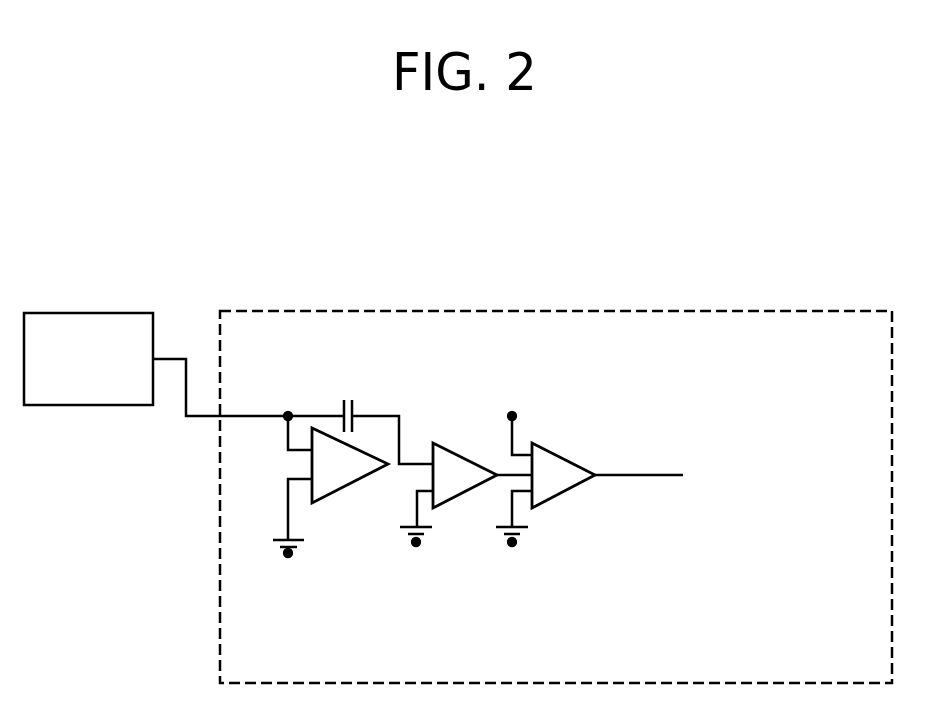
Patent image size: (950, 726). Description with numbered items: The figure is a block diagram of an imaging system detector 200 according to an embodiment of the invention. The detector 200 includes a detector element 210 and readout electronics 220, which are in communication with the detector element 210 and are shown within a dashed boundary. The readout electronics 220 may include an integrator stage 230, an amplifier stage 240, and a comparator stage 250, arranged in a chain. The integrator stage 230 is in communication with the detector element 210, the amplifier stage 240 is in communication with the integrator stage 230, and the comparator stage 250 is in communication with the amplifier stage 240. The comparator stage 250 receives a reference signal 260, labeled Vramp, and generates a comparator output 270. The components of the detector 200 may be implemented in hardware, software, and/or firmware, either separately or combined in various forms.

The imaging system detector 200 is at (158, 208).
The detector element 210 is at (83, 312).
The readout electronics 220 is at (296, 310).
The integrator stage 230 is at (288, 598).
The amplifier stage 240 is at (412, 598).
The comparator stage 250 is at (548, 598).
The reference signal 260 is at (507, 373).
The comparator output 270 is at (675, 472).